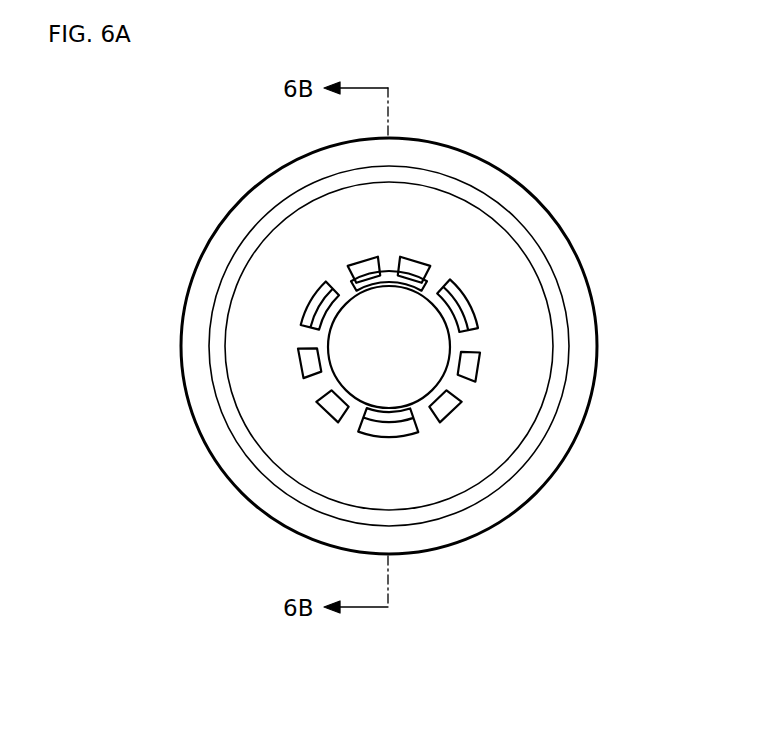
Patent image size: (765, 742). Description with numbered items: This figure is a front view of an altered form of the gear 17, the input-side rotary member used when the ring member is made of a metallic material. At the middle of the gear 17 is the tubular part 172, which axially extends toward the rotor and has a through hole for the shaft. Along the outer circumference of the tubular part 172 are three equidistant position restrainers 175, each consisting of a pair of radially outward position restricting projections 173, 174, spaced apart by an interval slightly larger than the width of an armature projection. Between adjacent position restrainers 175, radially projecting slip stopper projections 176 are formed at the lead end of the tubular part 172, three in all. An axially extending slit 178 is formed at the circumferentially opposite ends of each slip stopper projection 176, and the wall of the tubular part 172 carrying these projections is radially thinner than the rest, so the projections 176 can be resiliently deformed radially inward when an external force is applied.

The gear 17 is at (528, 197).
The tubular part 172 is at (452, 350).
The position restricting projection 173 is at (366, 266).
The position restricting projection 174 is at (412, 266).
The position restrainer 175 is at (452, 223).
The slip stopper projection 176 is at (321, 298).
The slit 178 is at (345, 283).